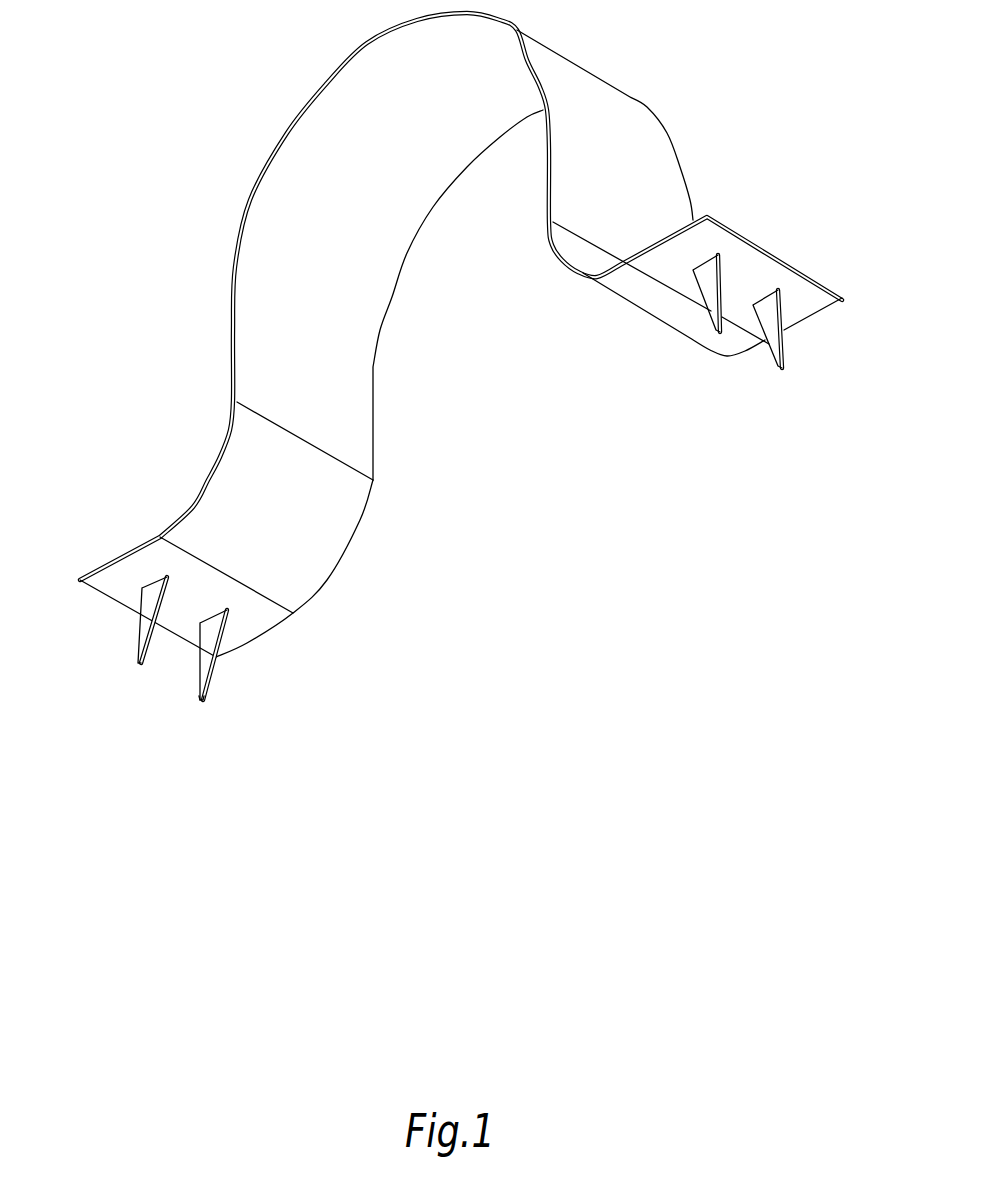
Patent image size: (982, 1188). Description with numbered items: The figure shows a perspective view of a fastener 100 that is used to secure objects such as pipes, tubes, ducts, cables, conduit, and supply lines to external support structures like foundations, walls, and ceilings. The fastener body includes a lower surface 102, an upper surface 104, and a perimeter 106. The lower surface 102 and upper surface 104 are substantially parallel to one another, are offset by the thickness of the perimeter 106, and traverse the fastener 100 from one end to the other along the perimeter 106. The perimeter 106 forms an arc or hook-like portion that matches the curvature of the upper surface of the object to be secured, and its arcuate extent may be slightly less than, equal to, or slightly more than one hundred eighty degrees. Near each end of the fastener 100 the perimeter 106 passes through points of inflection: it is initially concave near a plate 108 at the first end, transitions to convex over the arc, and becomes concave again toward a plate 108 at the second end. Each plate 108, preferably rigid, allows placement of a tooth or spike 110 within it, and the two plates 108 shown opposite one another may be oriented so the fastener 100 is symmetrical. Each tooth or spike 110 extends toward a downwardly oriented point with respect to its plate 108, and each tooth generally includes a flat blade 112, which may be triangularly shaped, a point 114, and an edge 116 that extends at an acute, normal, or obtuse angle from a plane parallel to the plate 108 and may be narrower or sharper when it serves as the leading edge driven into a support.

The fastener 100 is at (459, 378).
The lower surface 102 is at (461, 296).
The upper surface 104 is at (640, 199).
The perimeter 106 is at (288, 133).
The plate 108 is at (262, 617).
The tooth or spike 110 is at (455, 499).
The flat blade 112 is at (200, 662).
The point 114 is at (202, 702).
The edge 116 is at (212, 673).